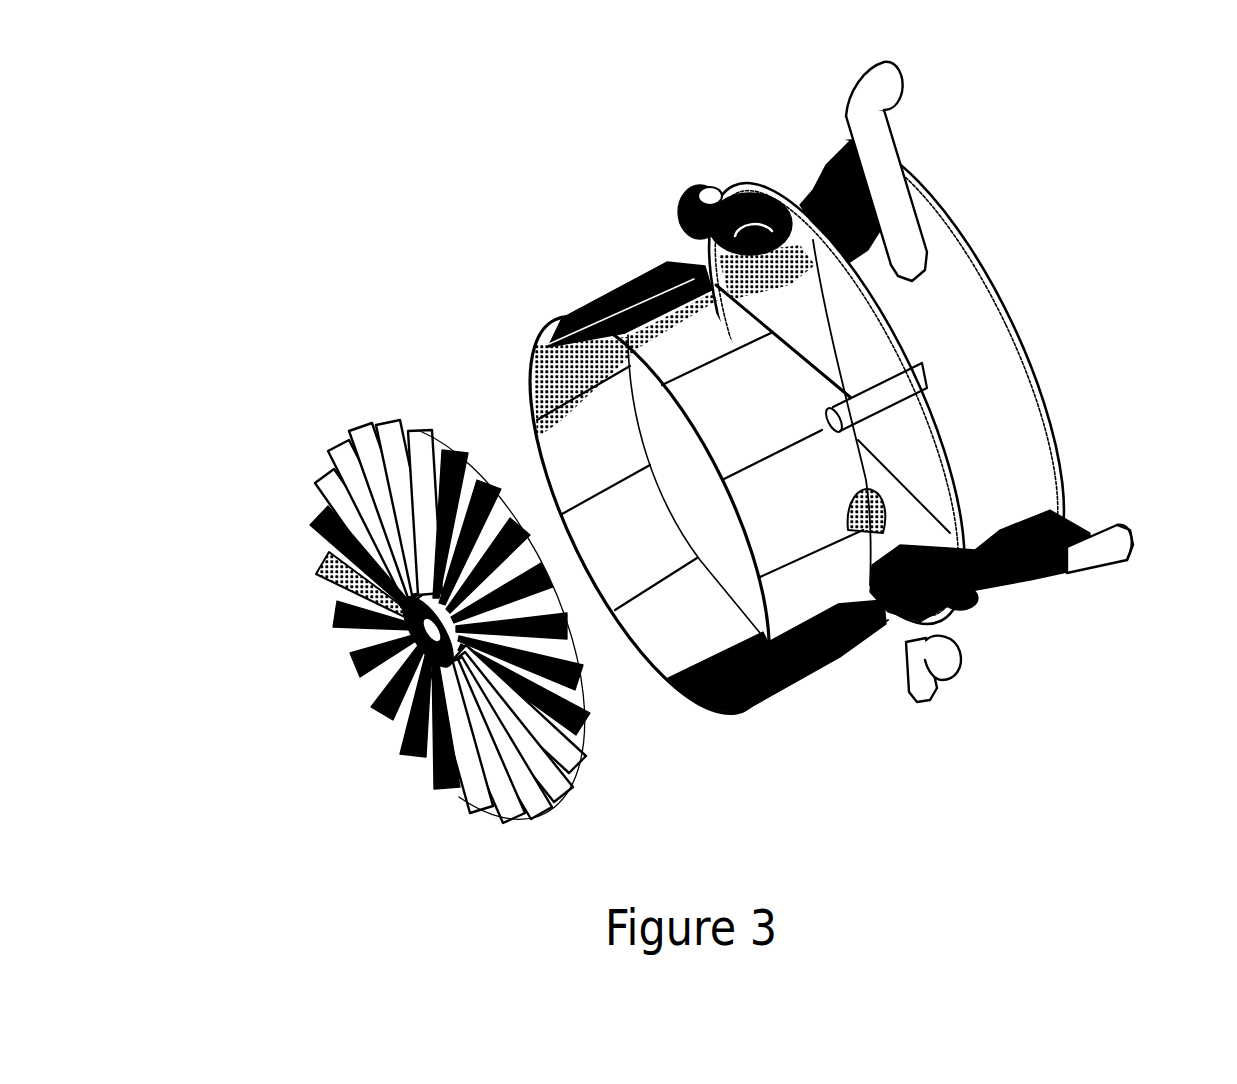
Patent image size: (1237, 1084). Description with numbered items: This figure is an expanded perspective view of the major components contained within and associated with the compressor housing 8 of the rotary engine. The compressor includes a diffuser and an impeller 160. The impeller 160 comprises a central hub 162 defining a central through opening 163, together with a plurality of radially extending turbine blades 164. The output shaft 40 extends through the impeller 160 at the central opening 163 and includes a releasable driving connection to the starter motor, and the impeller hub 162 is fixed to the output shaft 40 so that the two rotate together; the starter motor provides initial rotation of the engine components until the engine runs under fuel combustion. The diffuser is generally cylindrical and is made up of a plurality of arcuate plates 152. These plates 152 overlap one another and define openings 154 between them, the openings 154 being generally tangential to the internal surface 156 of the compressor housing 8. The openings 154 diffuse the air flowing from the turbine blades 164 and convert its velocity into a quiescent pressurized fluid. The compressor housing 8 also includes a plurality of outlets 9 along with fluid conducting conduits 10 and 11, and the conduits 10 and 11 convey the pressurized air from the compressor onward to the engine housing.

The compressor housing 8 is at (939, 365).
The outlets 9 is at (887, 405).
The fluid conducting conduit 10 is at (881, 425).
The fluid conducting conduit 11 is at (1041, 378).
The output shaft 40 is at (759, 390).
The arcuate plates 152 is at (732, 543).
The openings 154 is at (590, 486).
The internal surface 156 is at (831, 634).
The impeller 160 is at (414, 613).
The central hub 162 is at (369, 657).
The central through opening 163 is at (359, 713).
The turbine blades 164 is at (291, 578).